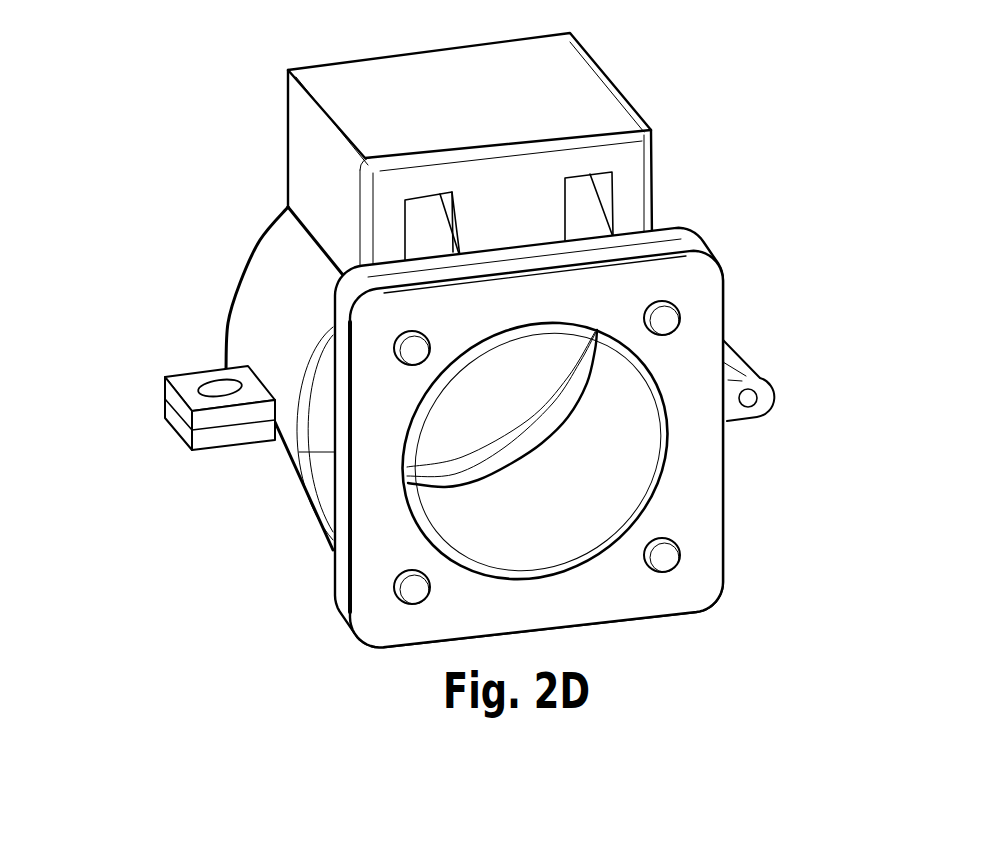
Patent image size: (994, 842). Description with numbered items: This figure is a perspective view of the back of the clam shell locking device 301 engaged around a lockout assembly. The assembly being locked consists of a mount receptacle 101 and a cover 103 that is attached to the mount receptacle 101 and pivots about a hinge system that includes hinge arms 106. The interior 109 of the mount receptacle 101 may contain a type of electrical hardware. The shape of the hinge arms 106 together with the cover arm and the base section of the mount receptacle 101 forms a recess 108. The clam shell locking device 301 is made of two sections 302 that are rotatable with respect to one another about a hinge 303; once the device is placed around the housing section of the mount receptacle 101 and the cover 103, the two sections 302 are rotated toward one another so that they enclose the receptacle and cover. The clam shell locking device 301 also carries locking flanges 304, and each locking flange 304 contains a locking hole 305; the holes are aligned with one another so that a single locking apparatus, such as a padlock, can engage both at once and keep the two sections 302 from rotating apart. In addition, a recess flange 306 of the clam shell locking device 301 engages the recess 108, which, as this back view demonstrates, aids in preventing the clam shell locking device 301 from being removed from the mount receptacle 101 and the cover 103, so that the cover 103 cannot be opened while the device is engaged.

The mount receptacle 101 is at (728, 234).
The cover 103 is at (515, 397).
The hinge arms 106 is at (427, 213).
The recess 108 is at (524, 226).
The interior 109 is at (620, 462).
The clam shell locking device 301 is at (624, 65).
The sections 302 is at (263, 275).
The hinge 303 is at (764, 386).
The locking flanges 304 is at (173, 393).
The locking hole 305 is at (218, 387).
The recess flange 306 is at (492, 178).